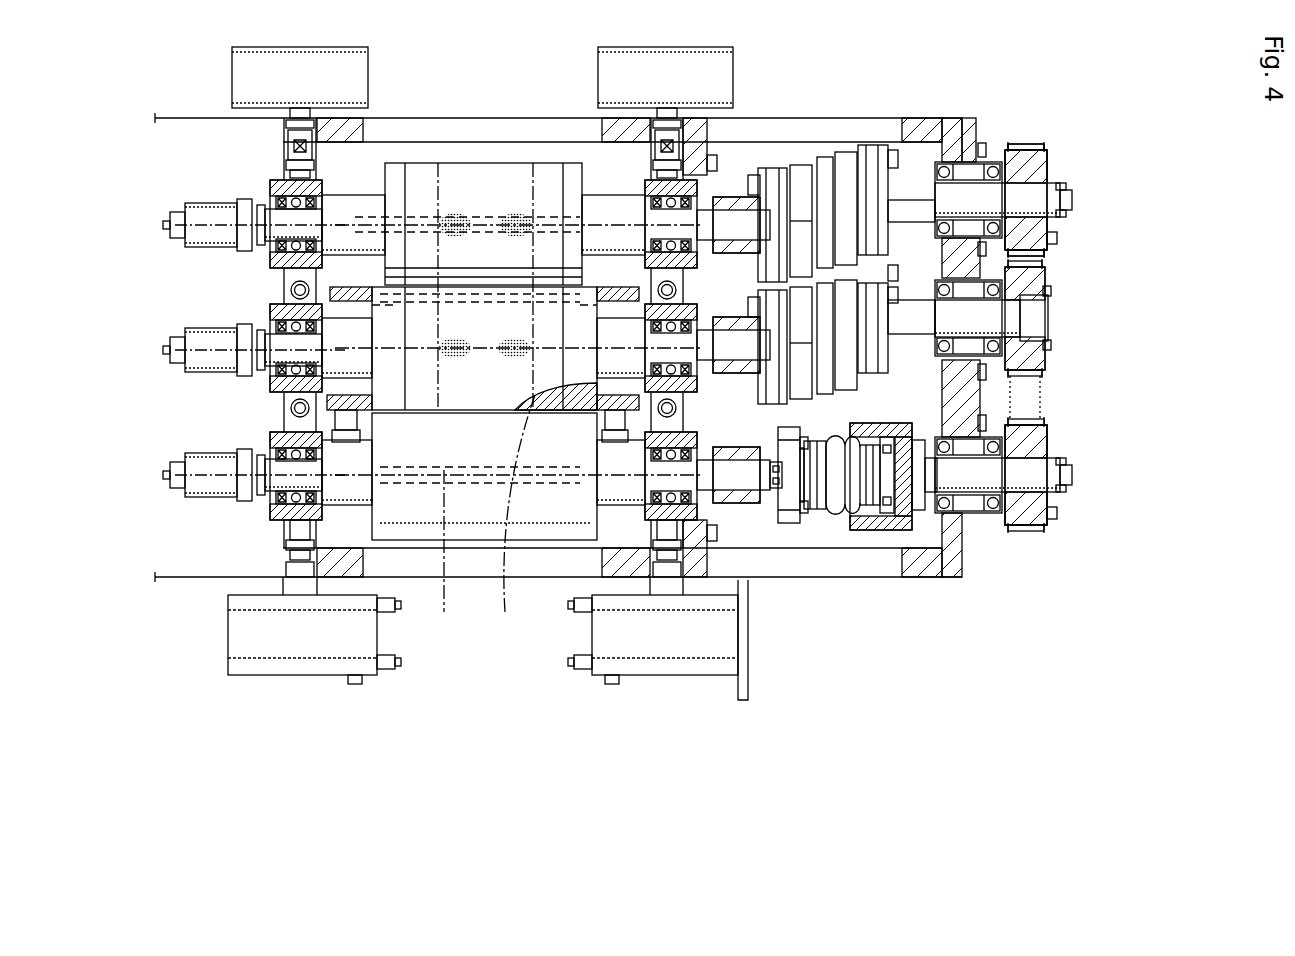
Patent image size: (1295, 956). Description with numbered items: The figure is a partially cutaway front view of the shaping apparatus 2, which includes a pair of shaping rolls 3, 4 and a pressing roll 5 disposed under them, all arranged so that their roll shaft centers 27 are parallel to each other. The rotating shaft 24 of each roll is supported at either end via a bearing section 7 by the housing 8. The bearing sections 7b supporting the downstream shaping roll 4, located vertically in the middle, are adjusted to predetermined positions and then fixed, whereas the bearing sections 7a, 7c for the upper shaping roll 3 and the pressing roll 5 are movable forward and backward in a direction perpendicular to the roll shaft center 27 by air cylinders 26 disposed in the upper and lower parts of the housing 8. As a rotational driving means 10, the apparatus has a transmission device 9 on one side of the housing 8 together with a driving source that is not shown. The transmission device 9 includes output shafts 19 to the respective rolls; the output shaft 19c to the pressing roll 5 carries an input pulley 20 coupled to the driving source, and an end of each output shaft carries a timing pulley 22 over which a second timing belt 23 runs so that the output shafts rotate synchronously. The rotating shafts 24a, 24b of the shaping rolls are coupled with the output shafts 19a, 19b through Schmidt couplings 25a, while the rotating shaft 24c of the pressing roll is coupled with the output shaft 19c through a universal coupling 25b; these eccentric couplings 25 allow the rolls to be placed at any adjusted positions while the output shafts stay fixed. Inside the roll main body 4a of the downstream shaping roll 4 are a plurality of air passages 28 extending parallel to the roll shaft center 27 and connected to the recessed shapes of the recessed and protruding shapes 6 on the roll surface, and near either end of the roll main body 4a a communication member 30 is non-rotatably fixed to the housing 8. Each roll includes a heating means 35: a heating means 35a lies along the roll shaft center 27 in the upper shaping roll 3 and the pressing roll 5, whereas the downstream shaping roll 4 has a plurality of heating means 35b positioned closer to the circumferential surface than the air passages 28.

The shaping apparatus 2 is at (988, 103).
The upper shaping roll 3 is at (385, 181).
The downstream shaping roll 4 is at (380, 290).
The roll main body 4a is at (542, 327).
The pressing roll 5 is at (373, 520).
The recessed and protruding shapes 6 is at (502, 343).
The bearing section 7 is at (426, 333).
The bearing section for the upper shaping roll 7a is at (272, 183).
The bearing section for the downstream shaping roll 7b is at (273, 310).
The bearing section for the pressing roll 7c is at (275, 450).
The housing 8 is at (388, 125).
The transmission device 9 is at (1047, 156).
The rotational driving means 10 is at (1026, 200).
The output shafts 19 is at (1050, 326).
The output shaft to the upper shaping roll 19a is at (1048, 200).
The output shaft to the downstream shaping roll 19b is at (1040, 318).
The output shaft to the pressing roll 19c is at (1050, 477).
The input pulley 20 is at (878, 520).
The timing pulley 22 is at (1023, 522).
The second timing belt 23 is at (1040, 387).
The rotating shaft 24 is at (756, 344).
The rotating shaft of the upper shaping roll 24a is at (737, 218).
The rotating shaft of the downstream shaping roll 24b is at (704, 342).
The rotating shaft of the pressing roll 24c is at (748, 482).
The eccentric couplings 25 is at (824, 344).
The Schmidt coupling 25a is at (827, 283).
The universal coupling 25b is at (833, 512).
The air cylinder 26 is at (297, 53).
The roll shaft center 27 is at (268, 223).
The air passages 28 is at (600, 193).
The communication member 30 is at (622, 287).
The heating means 35 is at (473, 352).
The heating means of the upper shaping roll and pressing roll 35a is at (423, 220).
The heating means of the downstream shaping roll 35b is at (515, 516).